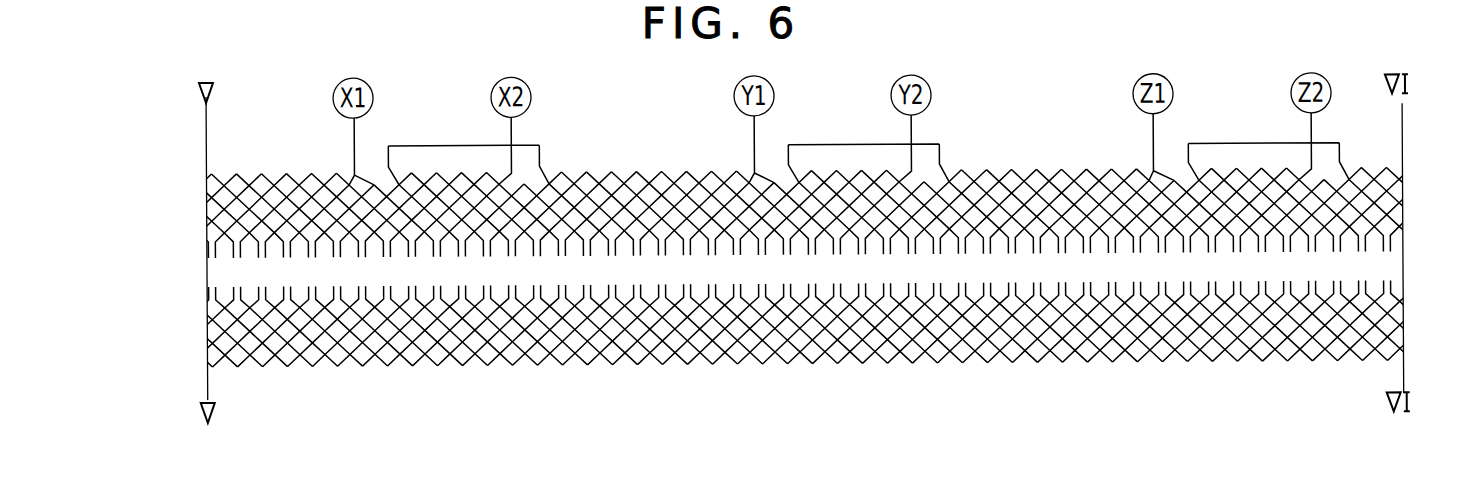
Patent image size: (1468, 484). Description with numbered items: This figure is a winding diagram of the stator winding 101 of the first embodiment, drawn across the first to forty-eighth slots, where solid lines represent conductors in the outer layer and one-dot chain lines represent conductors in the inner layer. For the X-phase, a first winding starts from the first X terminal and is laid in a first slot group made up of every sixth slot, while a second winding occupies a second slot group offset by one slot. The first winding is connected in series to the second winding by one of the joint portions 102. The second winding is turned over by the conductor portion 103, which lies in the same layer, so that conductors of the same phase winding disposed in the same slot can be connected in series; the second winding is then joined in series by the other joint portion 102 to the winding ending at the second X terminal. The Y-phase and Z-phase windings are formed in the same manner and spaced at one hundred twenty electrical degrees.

The stator winding 101 is at (310, 165).
The joint portion 102 is at (376, 180).
The conductor portion 103 is at (450, 143).